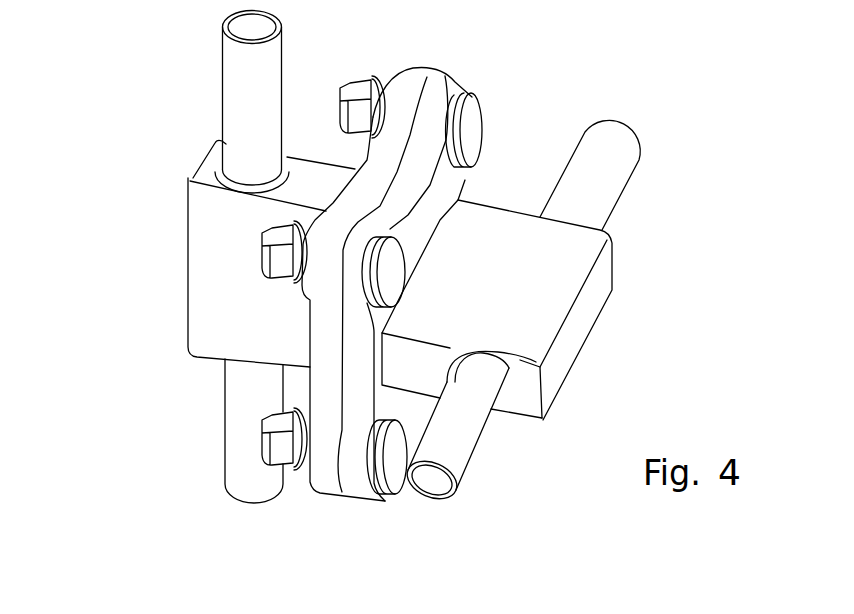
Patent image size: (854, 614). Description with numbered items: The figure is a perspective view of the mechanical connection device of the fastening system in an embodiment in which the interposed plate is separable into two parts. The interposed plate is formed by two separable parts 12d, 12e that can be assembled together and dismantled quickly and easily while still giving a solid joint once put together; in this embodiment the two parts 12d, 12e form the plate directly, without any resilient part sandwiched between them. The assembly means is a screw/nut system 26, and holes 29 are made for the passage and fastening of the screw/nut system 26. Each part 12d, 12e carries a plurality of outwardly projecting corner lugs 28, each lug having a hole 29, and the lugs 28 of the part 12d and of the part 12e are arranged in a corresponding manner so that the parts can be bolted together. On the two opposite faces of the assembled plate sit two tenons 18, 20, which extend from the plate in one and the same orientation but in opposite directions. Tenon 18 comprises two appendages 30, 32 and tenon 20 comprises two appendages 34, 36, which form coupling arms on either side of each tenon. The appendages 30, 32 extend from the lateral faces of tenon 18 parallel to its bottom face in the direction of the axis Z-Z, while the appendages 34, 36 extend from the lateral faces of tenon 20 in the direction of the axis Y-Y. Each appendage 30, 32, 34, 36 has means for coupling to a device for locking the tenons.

The separable part 12d is at (325, 370).
The separable part 12e is at (357, 393).
The tenon 18 is at (212, 220).
The tenon 20 is at (556, 362).
The screw/nut system 26 is at (379, 80).
The corner lug 28 is at (470, 110).
The hole 29 is at (463, 487).
The appendage 30 is at (248, 62).
The appendage 32 is at (238, 435).
The appendage 34 is at (590, 170).
The appendage 36 is at (465, 447).